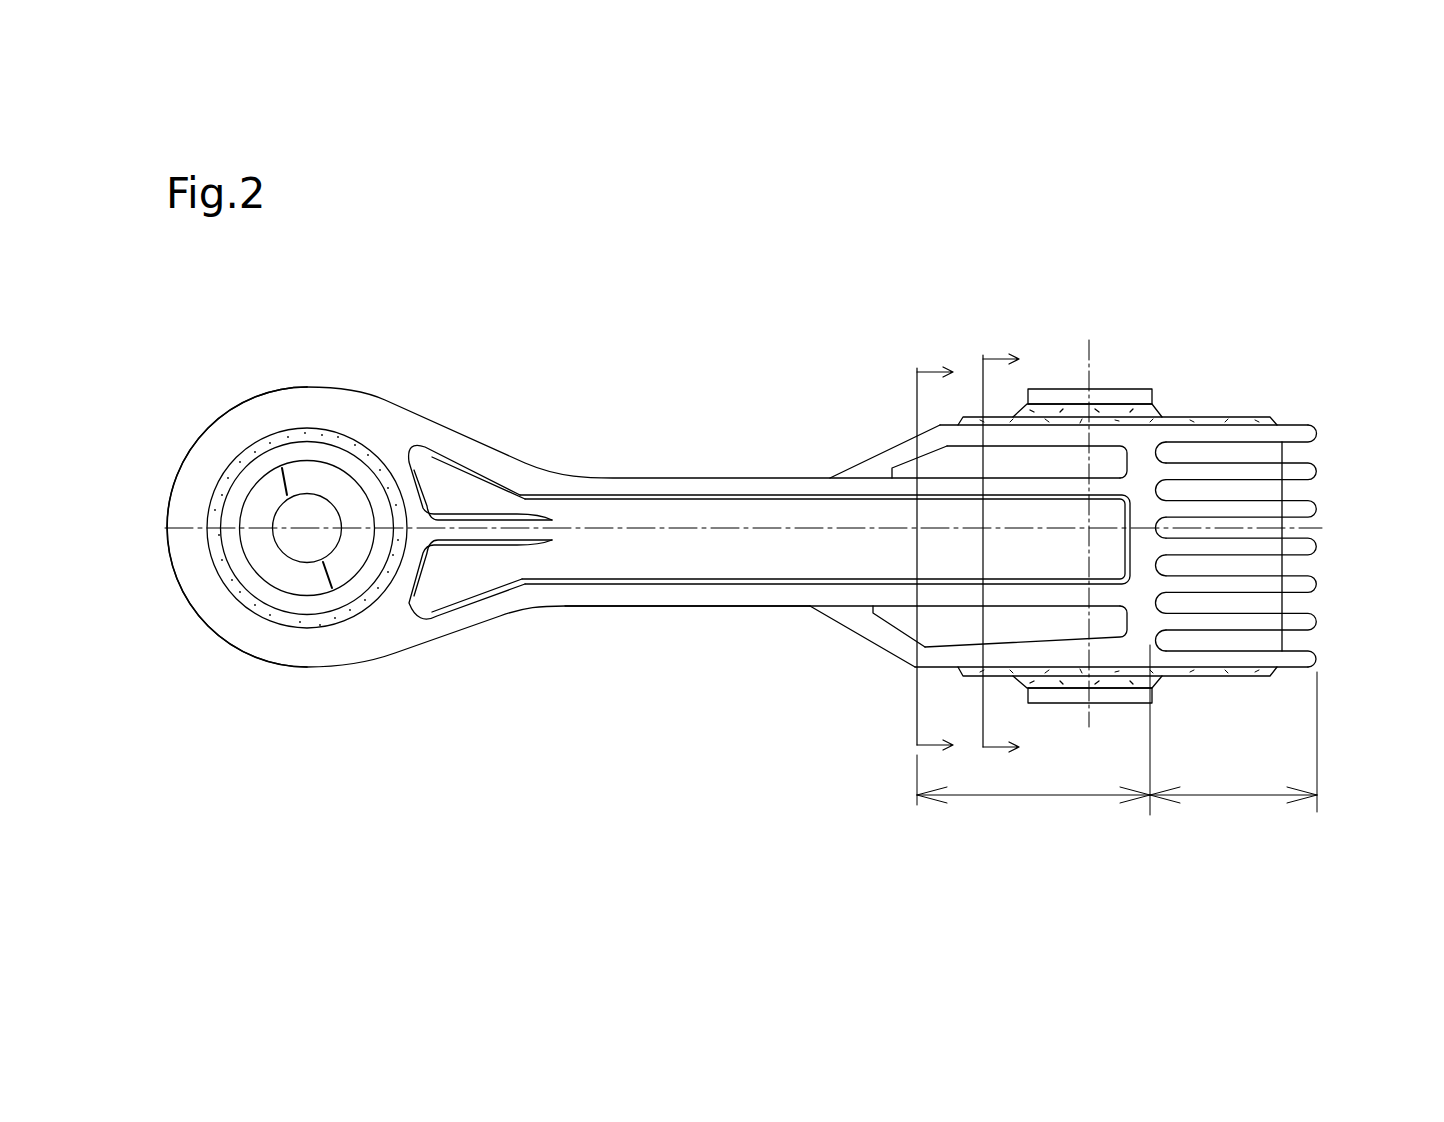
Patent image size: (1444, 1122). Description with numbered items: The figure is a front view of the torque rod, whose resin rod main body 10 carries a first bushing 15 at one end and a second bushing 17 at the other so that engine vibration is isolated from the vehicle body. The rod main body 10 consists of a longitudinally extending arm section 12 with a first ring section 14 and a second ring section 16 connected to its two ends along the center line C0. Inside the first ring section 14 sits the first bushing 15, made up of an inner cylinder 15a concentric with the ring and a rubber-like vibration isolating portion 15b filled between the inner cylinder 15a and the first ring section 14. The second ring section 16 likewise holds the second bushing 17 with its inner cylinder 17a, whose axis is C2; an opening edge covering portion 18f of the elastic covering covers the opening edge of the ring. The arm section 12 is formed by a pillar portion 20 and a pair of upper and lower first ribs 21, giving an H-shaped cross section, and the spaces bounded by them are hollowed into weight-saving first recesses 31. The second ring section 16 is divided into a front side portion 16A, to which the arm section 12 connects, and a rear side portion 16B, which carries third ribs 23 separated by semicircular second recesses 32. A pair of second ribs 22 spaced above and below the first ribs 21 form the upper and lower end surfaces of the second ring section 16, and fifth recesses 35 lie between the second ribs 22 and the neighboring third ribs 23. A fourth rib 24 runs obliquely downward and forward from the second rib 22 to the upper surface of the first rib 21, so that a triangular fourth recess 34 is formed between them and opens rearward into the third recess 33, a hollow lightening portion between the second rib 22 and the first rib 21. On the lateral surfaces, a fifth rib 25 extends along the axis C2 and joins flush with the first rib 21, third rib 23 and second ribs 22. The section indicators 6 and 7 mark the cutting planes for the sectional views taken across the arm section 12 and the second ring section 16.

The rod main body 10 is at (497, 425).
The arm section 12 is at (672, 470).
The first ring section 14 is at (290, 381).
The first bushing 15 is at (334, 457).
The inner cylinder 15a is at (283, 503).
The vibration isolating portion 15b is at (232, 505).
The second ring section 16 is at (1298, 422).
The front side portion 16A is at (1033, 736).
The rear side portion 16B is at (1233, 750).
The second bushing 17 is at (1167, 390).
The inner cylinder 17a is at (1110, 388).
The opening edge covering portion 18f is at (1260, 415).
The pillar portion 20 is at (643, 512).
The first ribs 21 is at (755, 477).
The second ribs 22 is at (1320, 433).
The third ribs 23 is at (1317, 472).
The fourth rib 24 is at (893, 455).
The fifth rib 25 is at (1148, 652).
The first recesses 31 is at (645, 570).
The second recesses 32 is at (1307, 493).
The third recess 33 is at (1010, 458).
The fourth recess 34 is at (920, 472).
The fifth recesses 35 is at (1302, 455).
The center line C0 is at (720, 529).
The axis of the inner cylinder C2 is at (1096, 519).
The section line 6 is at (949, 549).
The section line 7 is at (1020, 550).